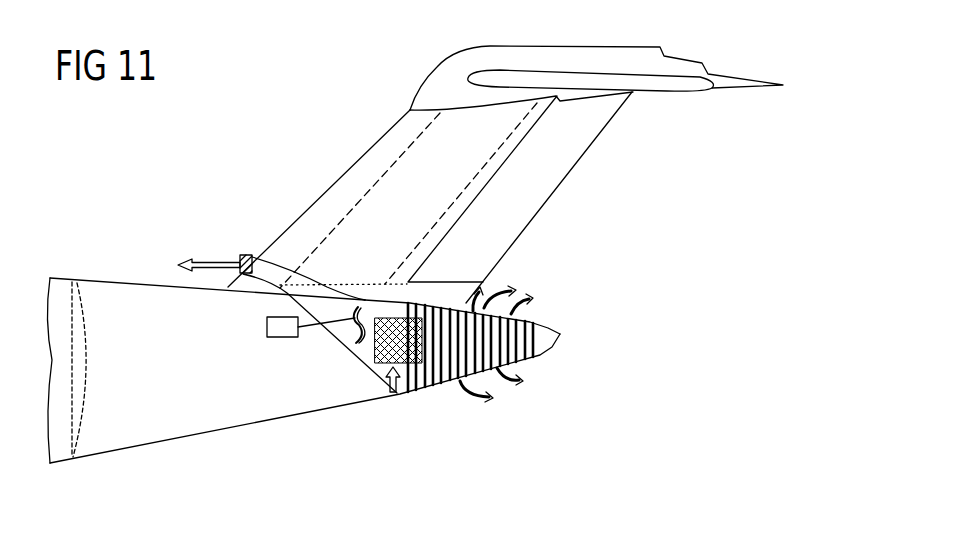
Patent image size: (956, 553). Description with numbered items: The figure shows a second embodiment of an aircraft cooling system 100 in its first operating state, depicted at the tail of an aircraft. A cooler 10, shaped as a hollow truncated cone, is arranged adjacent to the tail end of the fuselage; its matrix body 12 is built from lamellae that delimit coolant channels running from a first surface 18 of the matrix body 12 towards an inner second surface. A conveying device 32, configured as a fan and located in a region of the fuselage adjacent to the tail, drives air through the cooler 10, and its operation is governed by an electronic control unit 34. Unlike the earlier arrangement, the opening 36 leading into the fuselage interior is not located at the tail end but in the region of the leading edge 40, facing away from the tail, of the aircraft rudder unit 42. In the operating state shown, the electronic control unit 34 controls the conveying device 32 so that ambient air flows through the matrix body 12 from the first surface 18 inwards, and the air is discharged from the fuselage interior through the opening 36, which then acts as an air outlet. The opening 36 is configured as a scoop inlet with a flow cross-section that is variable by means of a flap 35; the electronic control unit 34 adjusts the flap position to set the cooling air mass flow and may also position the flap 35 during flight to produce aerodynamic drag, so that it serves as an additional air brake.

The aircraft cooling system 100 is at (693, 210).
The leading edge 40 is at (338, 178).
The aircraft rudder unit 42 is at (557, 176).
The opening 36 is at (240, 258).
The flap 35 is at (250, 255).
The electronic control unit 34 is at (267, 327).
The conveying device 32 is at (340, 343).
The cooler 10 is at (528, 322).
The matrix body 12 is at (434, 398).
The first surface 18 is at (447, 383).